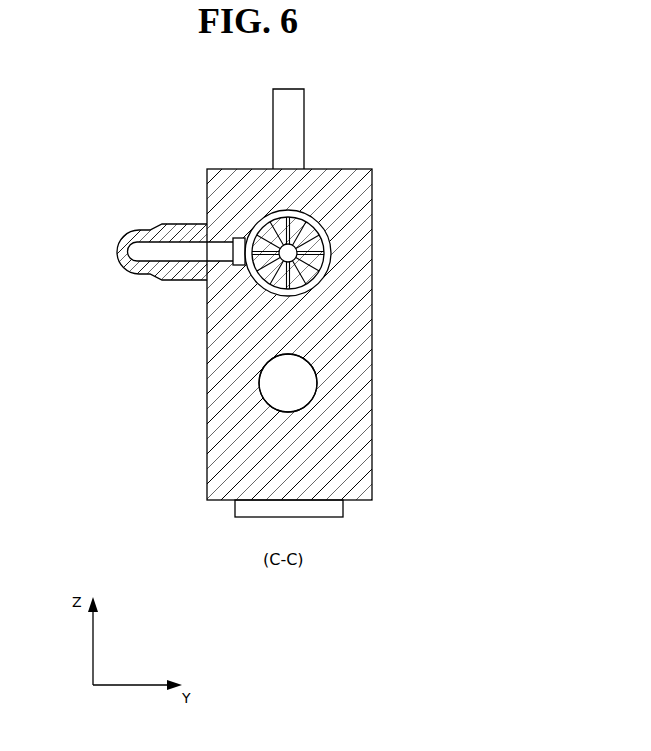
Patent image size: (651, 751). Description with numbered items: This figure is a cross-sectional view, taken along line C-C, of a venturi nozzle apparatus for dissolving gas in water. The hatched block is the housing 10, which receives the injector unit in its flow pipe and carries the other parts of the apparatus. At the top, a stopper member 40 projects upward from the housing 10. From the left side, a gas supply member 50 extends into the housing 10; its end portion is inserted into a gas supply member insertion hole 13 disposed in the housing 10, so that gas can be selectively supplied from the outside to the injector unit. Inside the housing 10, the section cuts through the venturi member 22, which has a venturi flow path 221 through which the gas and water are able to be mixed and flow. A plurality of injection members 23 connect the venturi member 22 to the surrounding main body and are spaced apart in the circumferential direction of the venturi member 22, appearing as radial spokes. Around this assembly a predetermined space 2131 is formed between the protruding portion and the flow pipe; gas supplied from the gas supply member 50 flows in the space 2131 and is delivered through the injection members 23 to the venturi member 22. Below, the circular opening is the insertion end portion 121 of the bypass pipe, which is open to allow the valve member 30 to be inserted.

The housing 10 is at (365, 187).
The gas supply member insertion hole 13 is at (240, 237).
The venturi member 22 is at (293, 254).
The injection member 23 is at (322, 229).
The valve member 30 is at (270, 385).
The stopper member 40 is at (288, 123).
The gas supply member 50 is at (123, 248).
The insertion end portion 121 is at (318, 383).
The venturi flow path 221 is at (250, 283).
The space 2131 is at (313, 284).